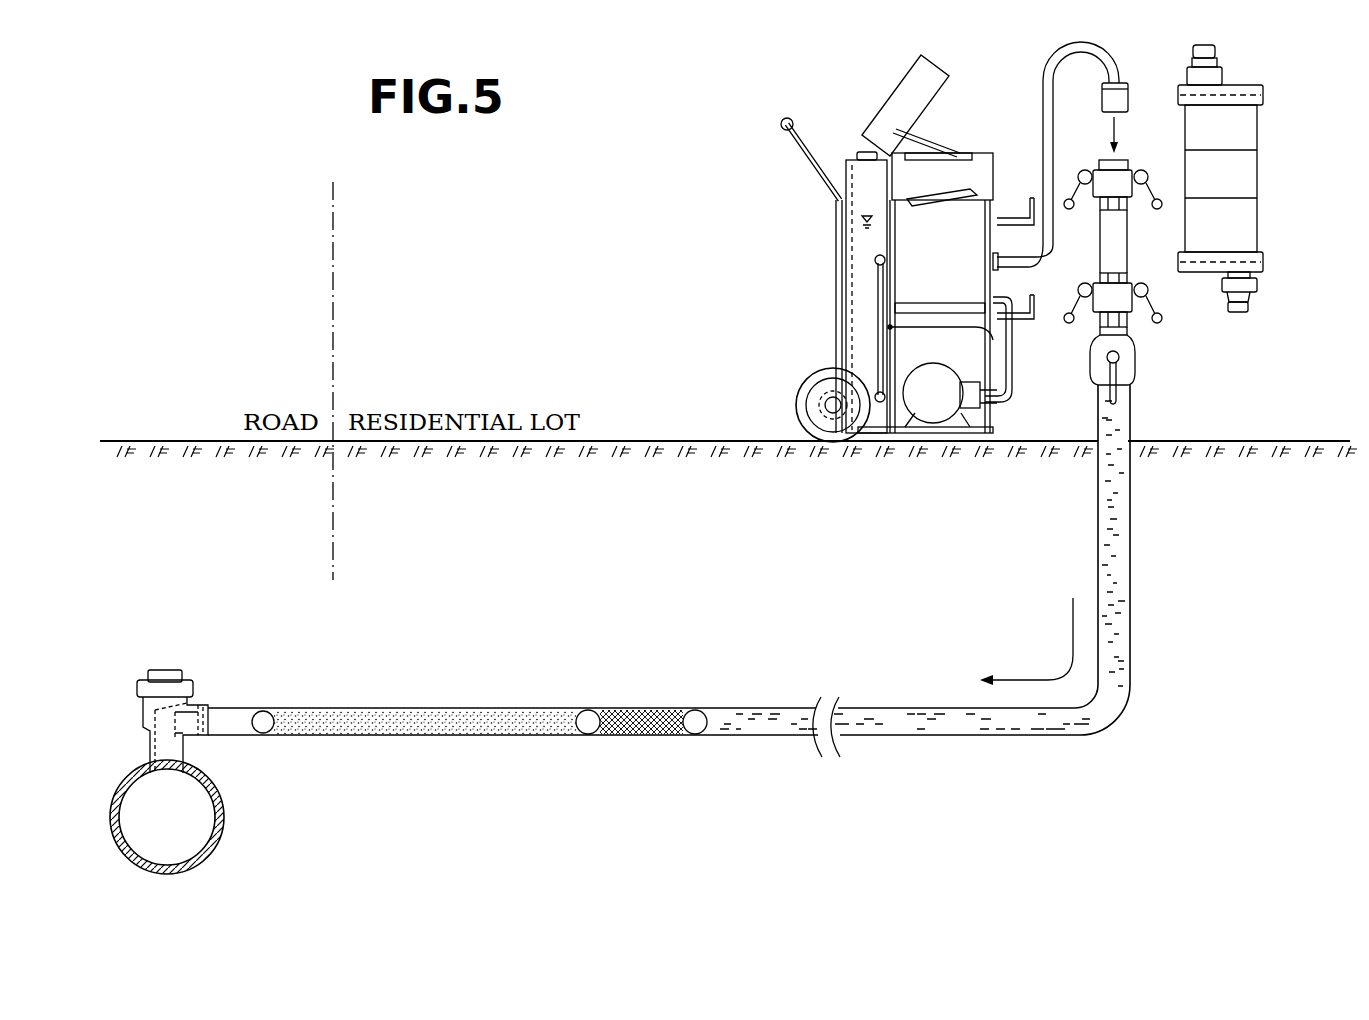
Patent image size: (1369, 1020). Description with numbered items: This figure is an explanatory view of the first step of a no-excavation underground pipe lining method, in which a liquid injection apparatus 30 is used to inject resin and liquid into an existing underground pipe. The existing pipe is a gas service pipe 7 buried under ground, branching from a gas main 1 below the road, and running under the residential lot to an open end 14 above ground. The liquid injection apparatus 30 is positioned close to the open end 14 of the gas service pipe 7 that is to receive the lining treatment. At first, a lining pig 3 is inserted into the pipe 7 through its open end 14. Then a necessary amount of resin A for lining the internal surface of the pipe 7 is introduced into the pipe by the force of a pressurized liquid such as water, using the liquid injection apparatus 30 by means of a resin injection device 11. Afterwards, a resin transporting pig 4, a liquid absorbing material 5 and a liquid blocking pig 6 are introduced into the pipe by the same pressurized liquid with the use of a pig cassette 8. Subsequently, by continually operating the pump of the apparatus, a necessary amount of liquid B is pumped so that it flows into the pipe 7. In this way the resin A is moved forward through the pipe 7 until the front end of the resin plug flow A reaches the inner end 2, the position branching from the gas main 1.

The gas main 1 is at (202, 849).
The inner end 2 is at (206, 700).
The lining pig 3 is at (263, 731).
The resin transporting pig 4 is at (590, 731).
The liquid absorbing material 5 is at (606, 716).
The liquid blocking pig 6 is at (696, 716).
The gas service pipe 7 is at (245, 707).
The pig cassette 8 is at (1115, 243).
The resin injection device 11 is at (1247, 130).
The open end 14 is at (1133, 373).
The liquid injection apparatus 30 is at (815, 70).
The resin A is at (376, 714).
The liquid B is at (1117, 539).